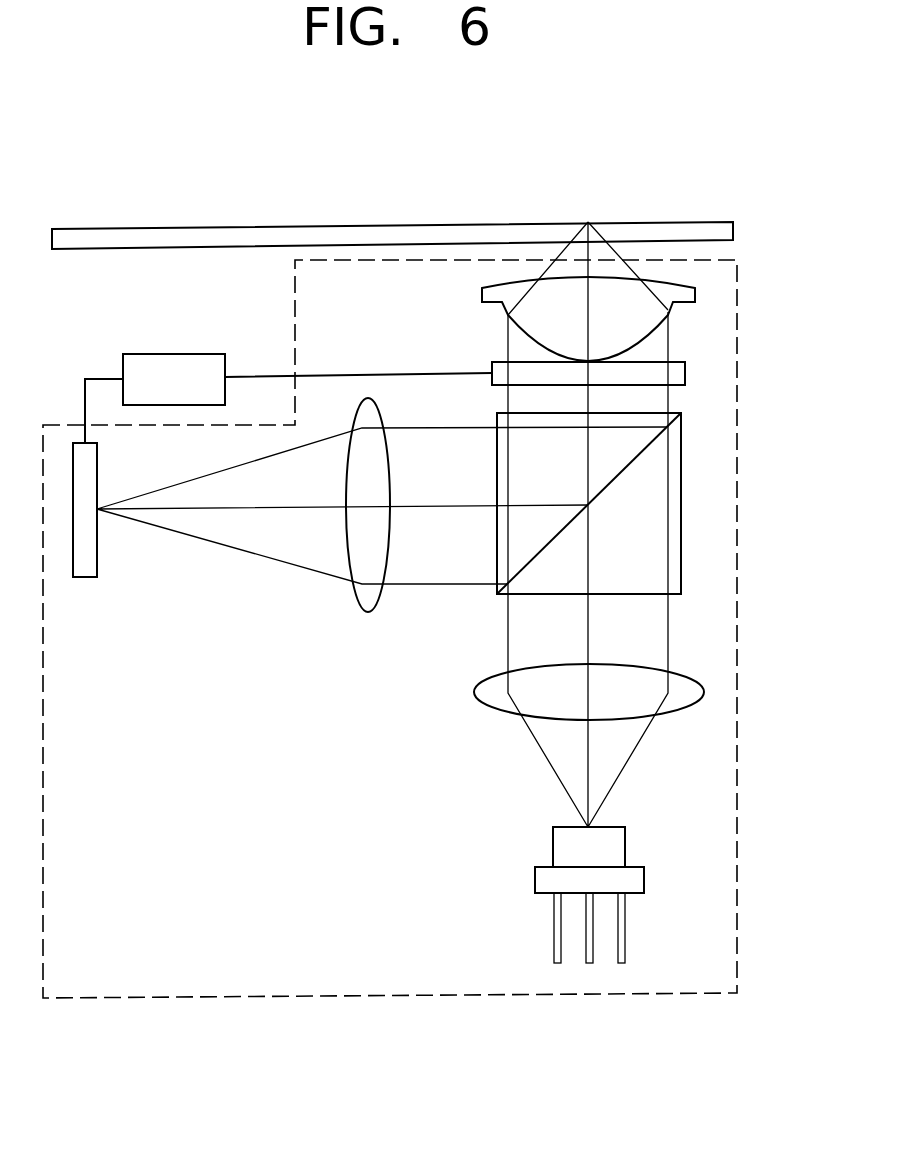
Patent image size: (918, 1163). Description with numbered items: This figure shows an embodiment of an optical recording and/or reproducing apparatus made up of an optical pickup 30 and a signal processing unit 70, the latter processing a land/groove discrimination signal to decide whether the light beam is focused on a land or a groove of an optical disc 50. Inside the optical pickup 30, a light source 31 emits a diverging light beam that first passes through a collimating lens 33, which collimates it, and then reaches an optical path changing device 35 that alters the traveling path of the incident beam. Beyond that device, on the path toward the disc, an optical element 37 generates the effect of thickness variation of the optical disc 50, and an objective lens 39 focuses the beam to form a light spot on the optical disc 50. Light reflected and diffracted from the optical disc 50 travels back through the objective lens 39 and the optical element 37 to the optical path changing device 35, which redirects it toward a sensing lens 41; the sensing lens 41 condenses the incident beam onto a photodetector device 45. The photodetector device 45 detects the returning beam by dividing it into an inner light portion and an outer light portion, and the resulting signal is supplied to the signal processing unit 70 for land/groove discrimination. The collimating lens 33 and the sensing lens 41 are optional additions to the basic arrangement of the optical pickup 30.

The optical pickup 30 is at (737, 937).
The light source 31 is at (621, 849).
The collimating lens 33 is at (698, 690).
The optical path changing device 35 is at (675, 535).
The optical element 37 is at (685, 373).
The objective lens 39 is at (693, 307).
The sensing lens 41 is at (368, 614).
The photodetector device 45 is at (85, 580).
The optical disc 50 is at (733, 232).
The signal processing unit 70 is at (200, 358).